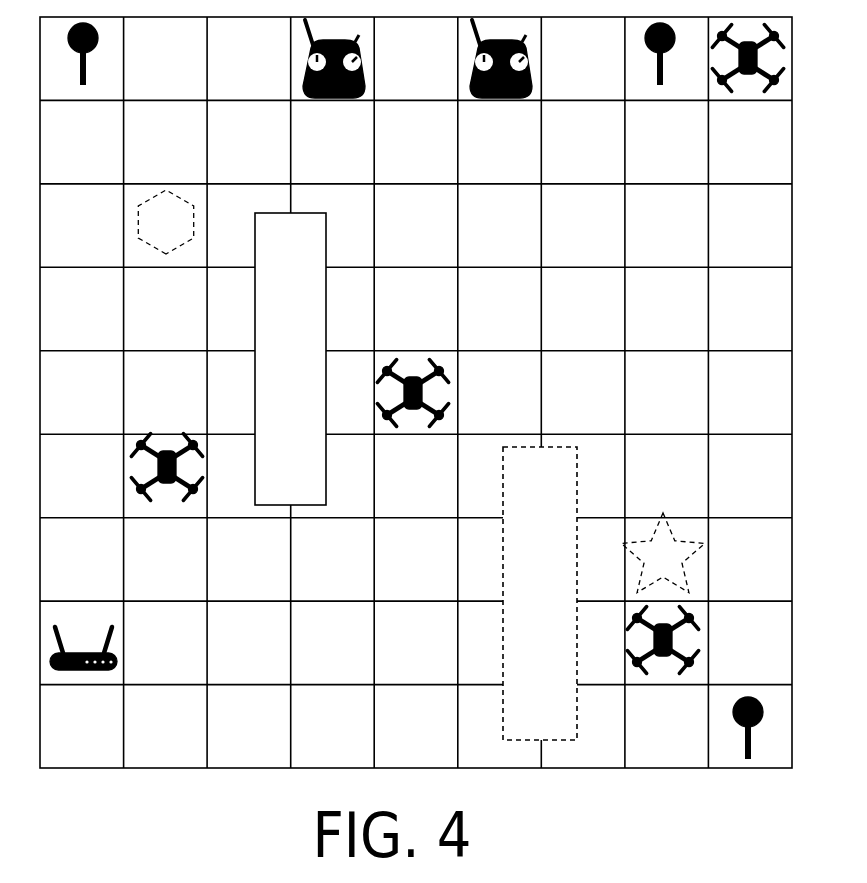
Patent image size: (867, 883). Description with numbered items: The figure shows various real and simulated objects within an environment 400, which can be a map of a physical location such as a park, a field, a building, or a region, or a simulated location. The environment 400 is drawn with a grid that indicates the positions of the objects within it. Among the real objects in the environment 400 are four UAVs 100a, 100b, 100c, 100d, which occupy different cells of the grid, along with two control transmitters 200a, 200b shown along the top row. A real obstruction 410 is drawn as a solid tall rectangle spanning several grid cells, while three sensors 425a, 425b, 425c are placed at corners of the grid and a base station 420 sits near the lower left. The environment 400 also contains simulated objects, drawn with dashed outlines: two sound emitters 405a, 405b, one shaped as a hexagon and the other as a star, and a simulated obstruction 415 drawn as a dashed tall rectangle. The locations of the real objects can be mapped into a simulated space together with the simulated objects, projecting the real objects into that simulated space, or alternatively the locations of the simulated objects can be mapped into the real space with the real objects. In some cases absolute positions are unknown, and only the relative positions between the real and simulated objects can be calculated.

The environment 400 is at (663, 769).
The obstruction 410 is at (252, 208).
The obstruction 415 is at (563, 446).
The sound emitter 405a is at (180, 259).
The sound emitter 405b is at (647, 531).
The sensor 425a is at (88, 116).
The sensor 425b is at (668, 116).
The sensor 425c is at (742, 679).
The control transmitter 200a is at (338, 116).
The control transmitter 200b is at (506, 116).
The UAV 100a is at (414, 361).
The UAV 100b is at (170, 441).
The UAV 100c is at (667, 679).
The UAV 100d is at (755, 116).
The base station 420 is at (85, 626).